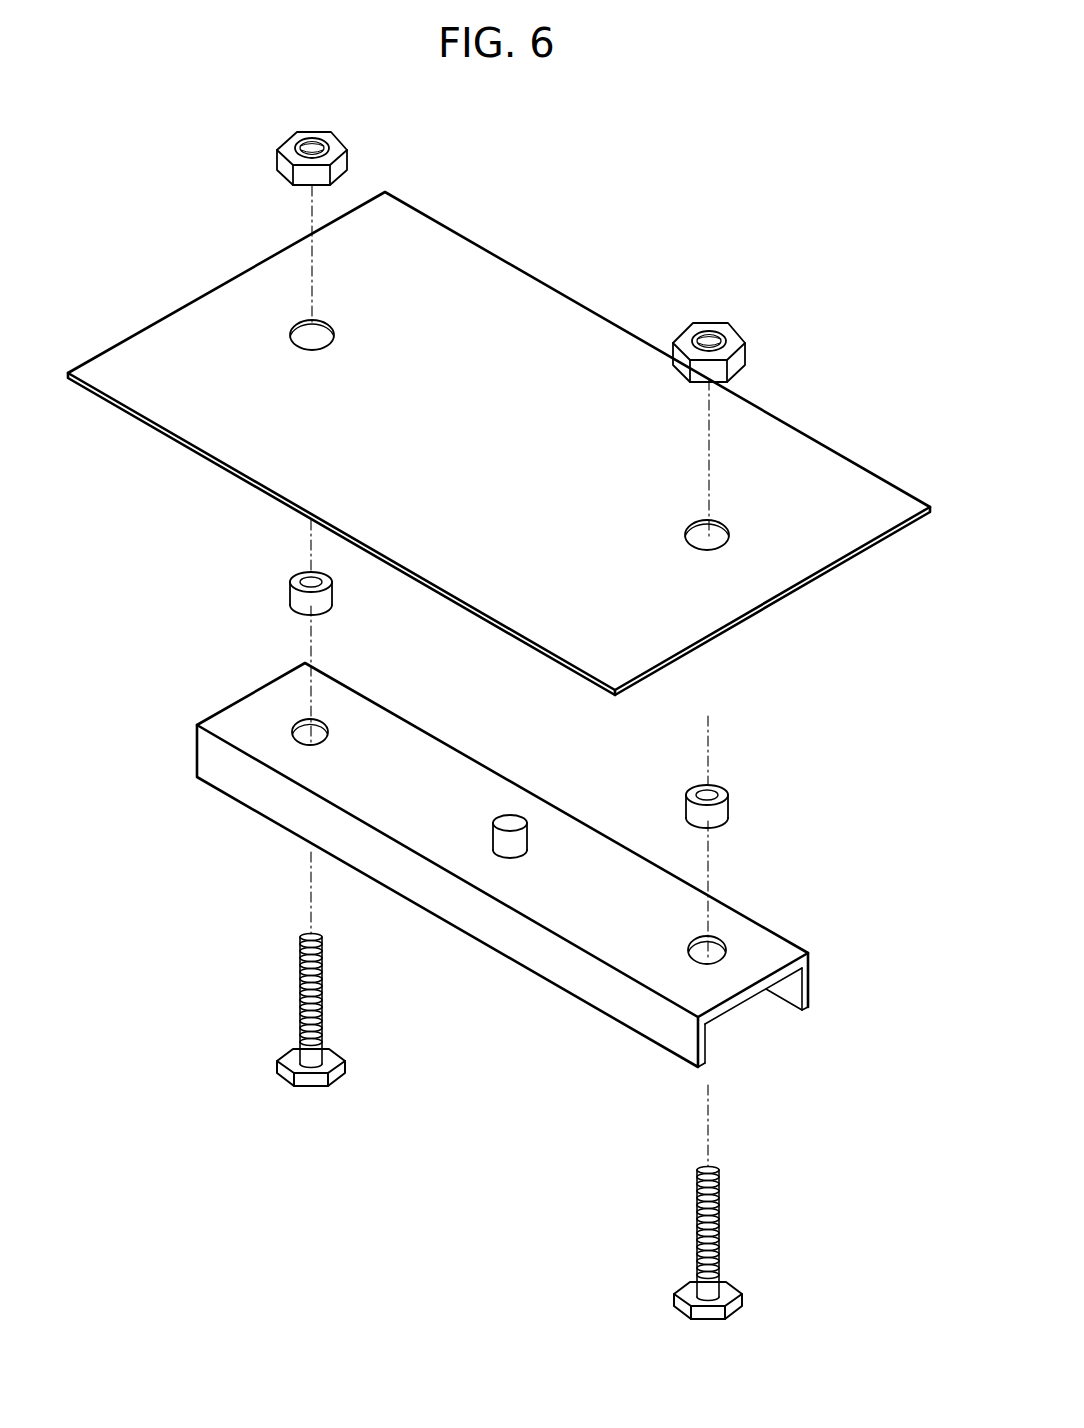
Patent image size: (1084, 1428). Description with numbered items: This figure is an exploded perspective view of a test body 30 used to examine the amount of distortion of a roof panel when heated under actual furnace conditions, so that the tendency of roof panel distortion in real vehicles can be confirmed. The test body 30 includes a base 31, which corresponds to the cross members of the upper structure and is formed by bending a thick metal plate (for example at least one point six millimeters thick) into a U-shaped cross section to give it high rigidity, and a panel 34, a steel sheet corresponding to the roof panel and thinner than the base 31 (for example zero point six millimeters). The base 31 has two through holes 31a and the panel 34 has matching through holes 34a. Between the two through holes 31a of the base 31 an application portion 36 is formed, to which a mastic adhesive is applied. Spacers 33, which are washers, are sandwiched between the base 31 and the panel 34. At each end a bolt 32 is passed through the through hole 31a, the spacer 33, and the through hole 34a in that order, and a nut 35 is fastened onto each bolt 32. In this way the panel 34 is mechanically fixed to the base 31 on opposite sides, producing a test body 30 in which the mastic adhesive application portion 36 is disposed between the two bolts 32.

The test body 30 is at (143, 235).
The base 31 is at (590, 852).
The through hole 31a is at (329, 732).
The bolt 32 is at (323, 1019).
The spacer 33 is at (333, 590).
The panel 34 is at (490, 292).
The through hole 34a is at (334, 335).
The nut 35 is at (348, 160).
The application portion 36 is at (518, 818).